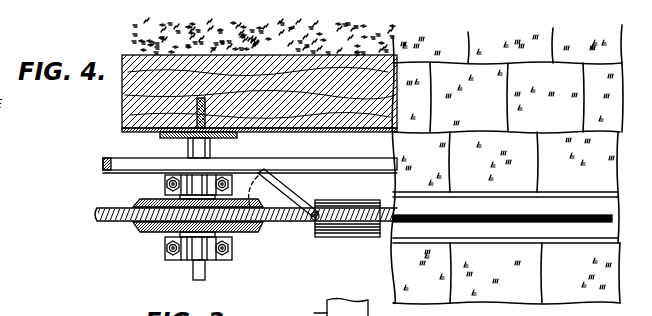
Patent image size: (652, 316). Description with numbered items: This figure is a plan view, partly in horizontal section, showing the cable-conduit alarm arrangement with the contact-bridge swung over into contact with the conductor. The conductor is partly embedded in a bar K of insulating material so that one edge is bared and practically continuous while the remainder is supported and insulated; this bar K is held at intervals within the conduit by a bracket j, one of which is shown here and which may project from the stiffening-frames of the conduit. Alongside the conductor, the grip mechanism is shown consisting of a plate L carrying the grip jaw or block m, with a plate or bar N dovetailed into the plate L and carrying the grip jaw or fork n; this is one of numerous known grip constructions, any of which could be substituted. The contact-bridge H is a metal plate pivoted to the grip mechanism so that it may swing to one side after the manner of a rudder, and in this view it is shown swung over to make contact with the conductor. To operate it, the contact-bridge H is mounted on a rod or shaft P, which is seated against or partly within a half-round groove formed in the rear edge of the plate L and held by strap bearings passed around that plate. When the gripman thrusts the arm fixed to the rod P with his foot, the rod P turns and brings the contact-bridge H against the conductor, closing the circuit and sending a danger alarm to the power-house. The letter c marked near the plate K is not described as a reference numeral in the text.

The bar of insulating material K is at (125, 147).
The plate strip c is at (104, 172).
The bracket j is at (181, 145).
The contact-bridge H is at (286, 208).
The grip jaw or fork n is at (347, 195).
The grip jaw or block m is at (340, 237).
The plate L is at (347, 223).
The plate or bar N is at (347, 300).
The rod or shaft P is at (312, 310).